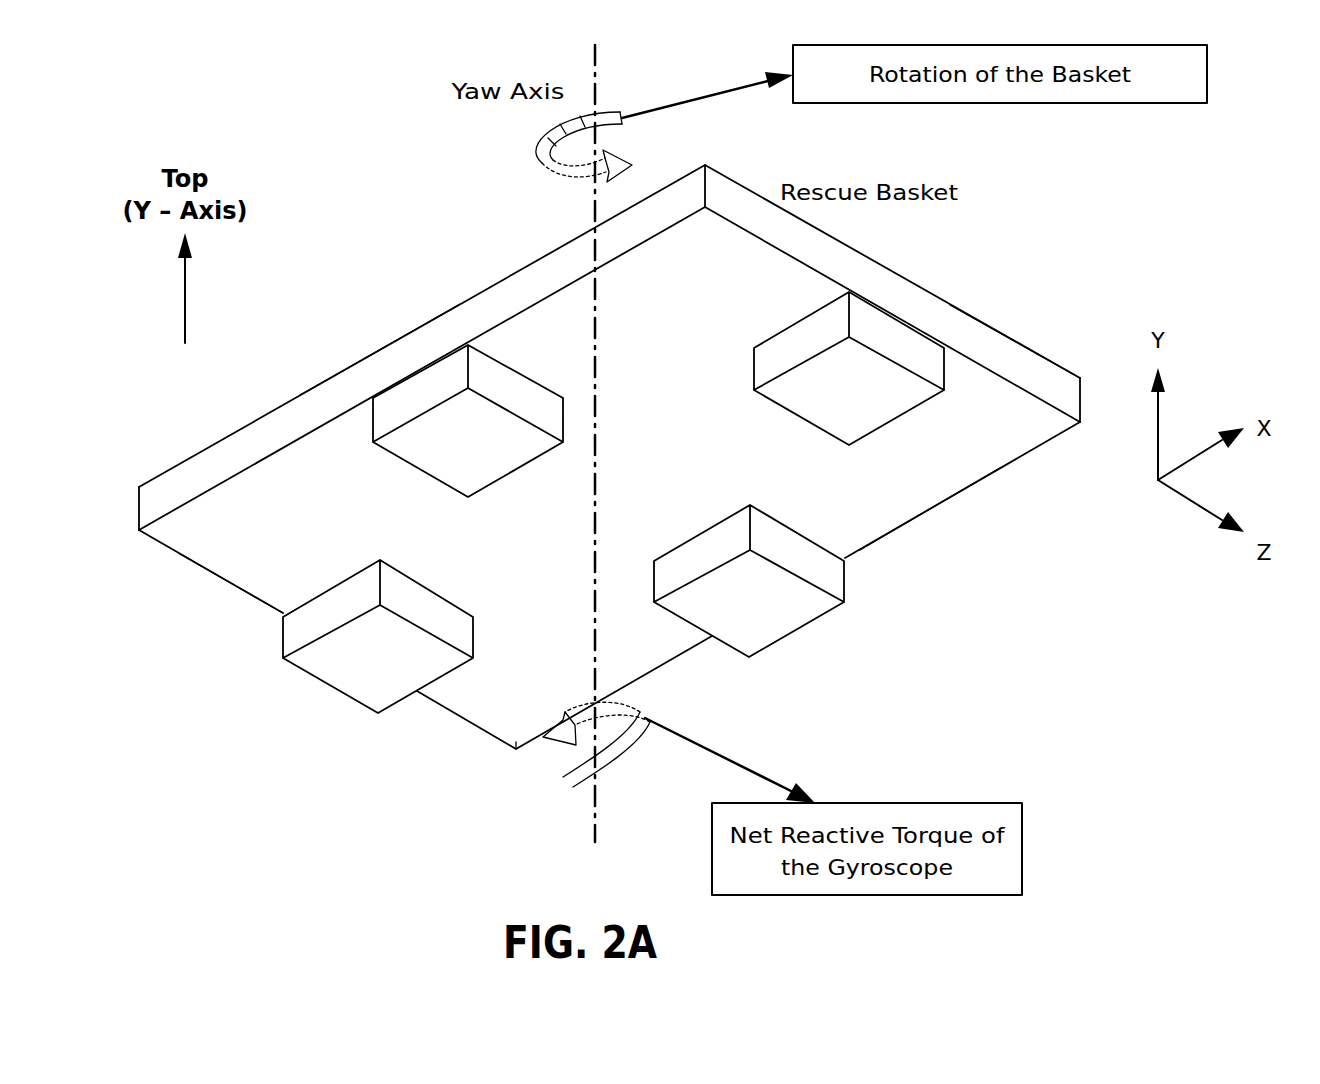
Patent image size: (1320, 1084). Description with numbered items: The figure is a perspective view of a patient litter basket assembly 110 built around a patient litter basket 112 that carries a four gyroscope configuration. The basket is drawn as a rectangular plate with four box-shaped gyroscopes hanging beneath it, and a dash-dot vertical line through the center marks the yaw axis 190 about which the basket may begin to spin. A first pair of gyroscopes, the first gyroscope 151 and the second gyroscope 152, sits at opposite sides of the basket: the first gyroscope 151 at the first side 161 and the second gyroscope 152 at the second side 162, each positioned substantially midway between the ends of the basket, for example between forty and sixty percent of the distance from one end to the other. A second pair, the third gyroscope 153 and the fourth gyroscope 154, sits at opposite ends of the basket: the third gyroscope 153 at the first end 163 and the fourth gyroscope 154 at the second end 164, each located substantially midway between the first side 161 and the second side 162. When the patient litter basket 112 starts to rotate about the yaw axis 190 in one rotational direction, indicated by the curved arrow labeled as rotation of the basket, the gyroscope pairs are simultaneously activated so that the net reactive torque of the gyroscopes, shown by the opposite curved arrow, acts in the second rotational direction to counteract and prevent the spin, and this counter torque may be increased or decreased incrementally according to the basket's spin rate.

The patient litter basket assembly 110 is at (1172, 190).
The patient litter basket 112 is at (512, 305).
The first gyroscope 151 is at (803, 598).
The second gyroscope 152 is at (433, 377).
The third gyroscope 153 is at (323, 660).
The fourth gyroscope 154 is at (907, 330).
The first side 161 is at (930, 500).
The second side 162 is at (367, 390).
The first end 163 is at (250, 593).
The second end 164 is at (1033, 353).
The yaw axis 190 is at (615, 441).